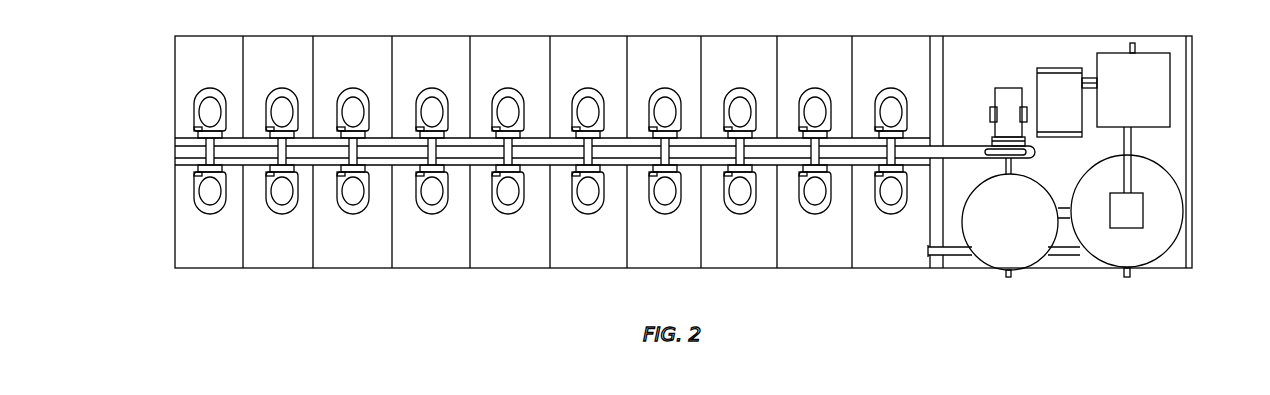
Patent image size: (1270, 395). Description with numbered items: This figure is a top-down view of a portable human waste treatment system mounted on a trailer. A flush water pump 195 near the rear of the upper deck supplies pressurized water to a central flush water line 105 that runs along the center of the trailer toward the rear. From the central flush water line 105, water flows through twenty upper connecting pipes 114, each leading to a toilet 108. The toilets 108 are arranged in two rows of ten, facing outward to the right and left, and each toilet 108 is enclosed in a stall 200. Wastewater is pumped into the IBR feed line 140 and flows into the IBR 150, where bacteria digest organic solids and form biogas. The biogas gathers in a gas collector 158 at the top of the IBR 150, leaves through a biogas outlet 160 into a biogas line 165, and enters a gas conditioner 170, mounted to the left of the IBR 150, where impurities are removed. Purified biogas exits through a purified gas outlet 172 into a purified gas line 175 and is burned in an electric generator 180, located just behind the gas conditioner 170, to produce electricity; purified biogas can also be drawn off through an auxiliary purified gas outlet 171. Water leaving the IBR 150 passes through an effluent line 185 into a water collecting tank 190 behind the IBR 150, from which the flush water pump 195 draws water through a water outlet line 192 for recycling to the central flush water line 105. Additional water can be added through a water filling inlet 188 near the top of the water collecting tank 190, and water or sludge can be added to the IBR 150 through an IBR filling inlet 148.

The central flush water line 105 is at (957, 145).
The toilet 108 is at (214, 88).
The upper connecting pipe 114 is at (205, 156).
The IBR feed line 140 is at (960, 256).
The IBR filling inlet 148 is at (1129, 278).
The IBR 150 is at (1184, 186).
The gas collector 158 is at (1143, 220).
The biogas outlet 160 is at (1123, 189).
The biogas line 165 is at (1132, 186).
The gas conditioner 170 is at (1150, 128).
The auxiliary purified gas outlet 171 is at (1136, 47).
The purified gas outlet 172 is at (1098, 84).
The purified gas line 175 is at (1090, 77).
The electric generator 180 is at (1036, 70).
The effluent line 185 is at (1063, 208).
The water filling inlet 188 is at (1009, 278).
The water collecting tank 190 is at (1042, 266).
The water outlet line 192 is at (1005, 165).
The flush water pump 195 is at (994, 93).
The stall 200 is at (203, 260).